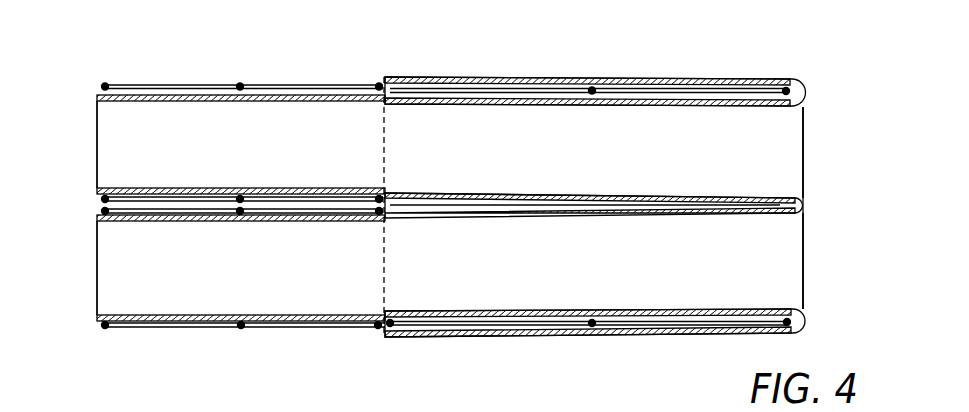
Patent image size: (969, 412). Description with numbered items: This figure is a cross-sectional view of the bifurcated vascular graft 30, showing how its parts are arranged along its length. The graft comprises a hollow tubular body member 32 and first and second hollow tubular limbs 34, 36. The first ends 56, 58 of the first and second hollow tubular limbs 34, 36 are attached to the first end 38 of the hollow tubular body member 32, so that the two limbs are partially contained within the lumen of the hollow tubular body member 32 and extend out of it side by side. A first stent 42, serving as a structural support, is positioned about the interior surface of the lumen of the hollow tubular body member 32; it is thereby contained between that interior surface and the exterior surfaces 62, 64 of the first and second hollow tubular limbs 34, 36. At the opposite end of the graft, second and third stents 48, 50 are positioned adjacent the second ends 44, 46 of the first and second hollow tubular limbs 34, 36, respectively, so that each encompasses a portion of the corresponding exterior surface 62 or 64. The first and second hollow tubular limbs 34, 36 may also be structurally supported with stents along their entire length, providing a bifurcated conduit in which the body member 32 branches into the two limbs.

The bifurcated vascular graft 30 is at (456, 59).
The hollow tubular body member 32 is at (523, 337).
The first hollow tubular limb 34 is at (213, 115).
The second hollow tubular limb 36 is at (183, 297).
The first end of hollow tubular body member 38 is at (808, 140).
The first stent 42 is at (545, 95).
The second end of first hollow tubular limb 44 is at (97, 143).
The second end of second hollow tubular limb 46 is at (97, 270).
The second stent 48 is at (286, 90).
The third stent 50 is at (298, 325).
The first end of first hollow tubular limb 56 is at (804, 163).
The first end of second hollow tubular limb 58 is at (804, 272).
The exterior surface of first hollow tubular limb 62 is at (279, 163).
The exterior surface of second hollow tubular limb 64 is at (282, 270).